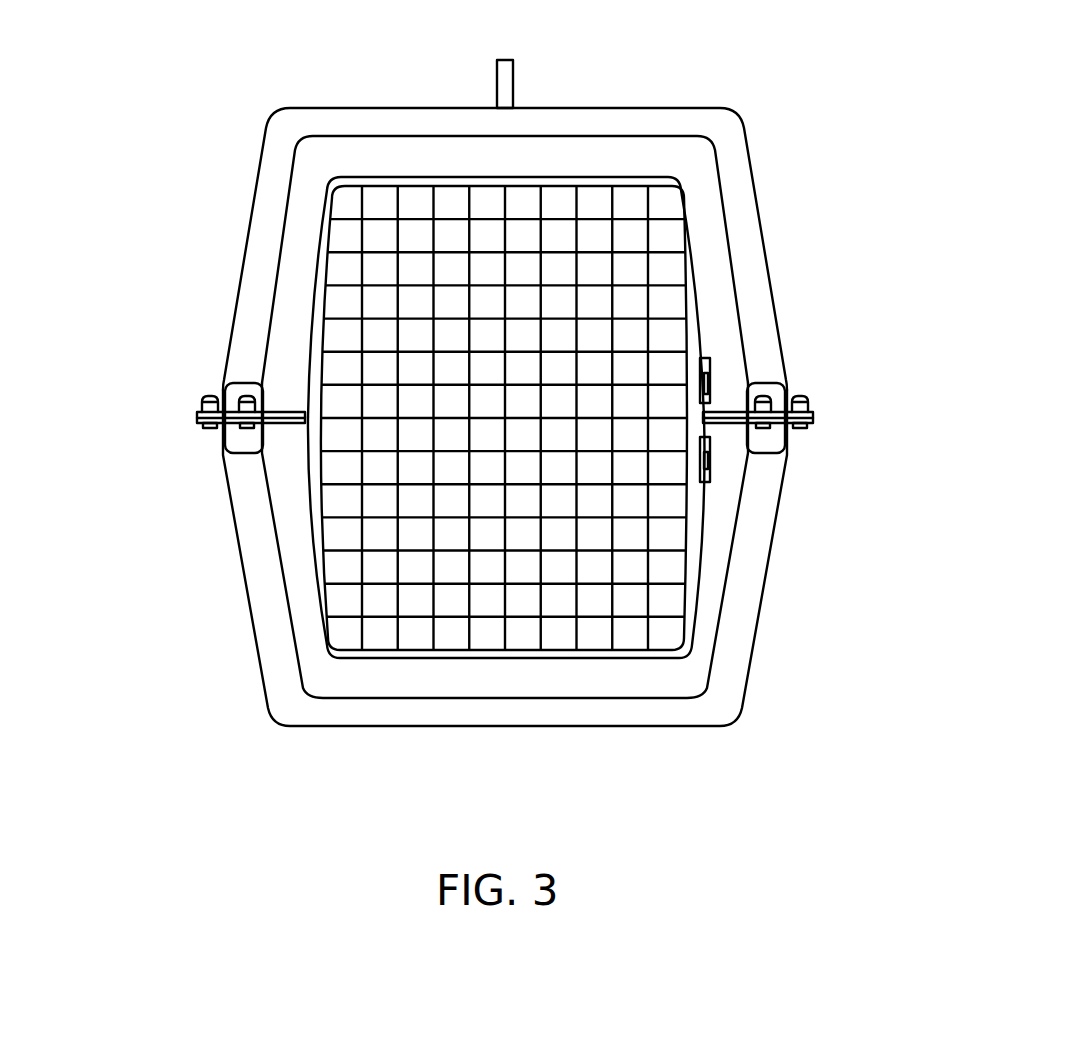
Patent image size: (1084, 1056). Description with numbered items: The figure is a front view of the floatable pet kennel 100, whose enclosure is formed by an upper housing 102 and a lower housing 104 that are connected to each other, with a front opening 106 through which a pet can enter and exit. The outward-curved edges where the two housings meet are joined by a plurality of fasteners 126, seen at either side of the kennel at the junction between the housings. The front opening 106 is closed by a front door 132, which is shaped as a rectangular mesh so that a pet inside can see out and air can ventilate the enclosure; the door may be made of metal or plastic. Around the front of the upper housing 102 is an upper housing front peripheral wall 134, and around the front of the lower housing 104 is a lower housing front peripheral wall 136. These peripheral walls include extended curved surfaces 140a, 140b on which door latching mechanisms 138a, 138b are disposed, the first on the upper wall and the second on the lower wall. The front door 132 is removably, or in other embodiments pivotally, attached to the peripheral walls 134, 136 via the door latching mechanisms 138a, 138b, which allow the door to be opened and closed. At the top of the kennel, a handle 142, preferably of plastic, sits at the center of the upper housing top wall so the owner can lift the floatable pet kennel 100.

The floatable pet kennel 100 is at (415, 369).
The upper housing 102 is at (818, 242).
The lower housing 104 is at (840, 586).
The front opening 106 is at (414, 505).
The fasteners 126 is at (813, 410).
The front door 132 is at (560, 620).
The upper housing front peripheral wall 134 is at (278, 157).
The lower housing front peripheral wall 136 is at (278, 668).
The door latching mechanism 138a is at (712, 366).
The door latching mechanism 138b is at (712, 476).
The extended curved surface 140a is at (297, 246).
The extended curved surface 140b is at (332, 678).
The handle 142 is at (505, 58).